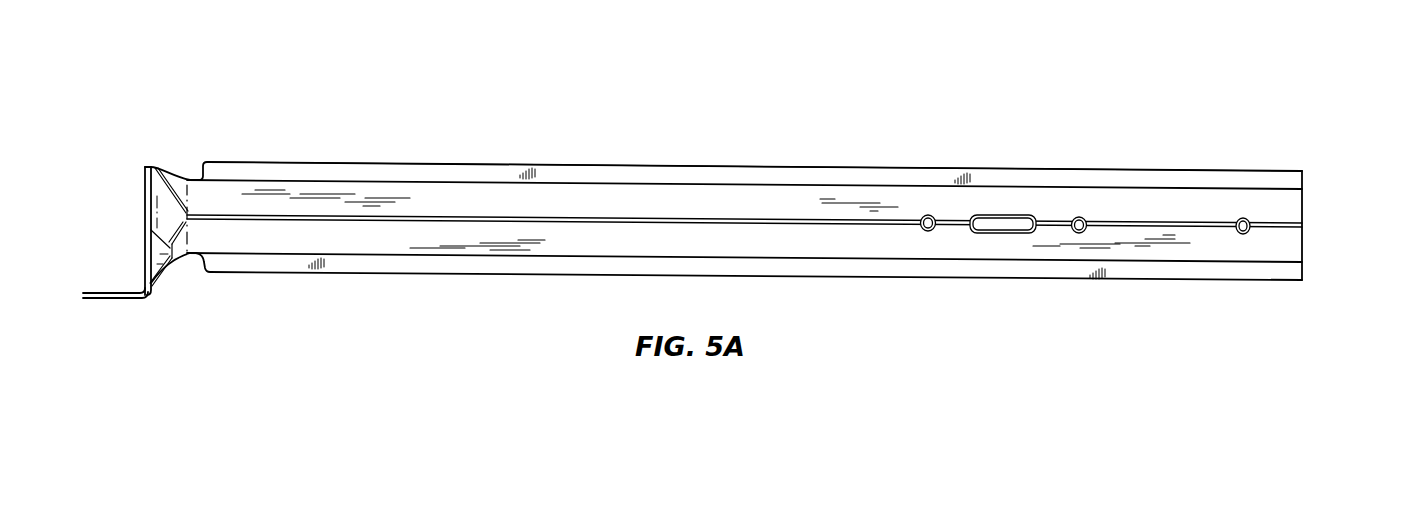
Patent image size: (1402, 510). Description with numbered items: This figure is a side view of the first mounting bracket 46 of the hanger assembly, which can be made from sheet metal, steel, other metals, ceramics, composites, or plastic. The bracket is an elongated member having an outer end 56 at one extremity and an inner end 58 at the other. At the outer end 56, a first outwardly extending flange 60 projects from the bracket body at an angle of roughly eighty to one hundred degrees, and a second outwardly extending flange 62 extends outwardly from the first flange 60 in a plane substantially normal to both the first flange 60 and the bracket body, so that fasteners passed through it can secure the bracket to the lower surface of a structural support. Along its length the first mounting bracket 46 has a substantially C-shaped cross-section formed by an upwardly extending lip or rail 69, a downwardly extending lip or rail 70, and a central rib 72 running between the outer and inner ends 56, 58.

The first mounting bracket 46 is at (813, 84).
The outer end 56 is at (218, 167).
The inner end 58 is at (1268, 175).
The first outwardly extending flange 60 is at (149, 167).
The second outwardly extending flange 62 is at (103, 299).
The upwardly extending lip or rail 69 is at (468, 172).
The downwardly extending lip or rail 70 is at (450, 270).
The central rib 72 is at (1302, 224).